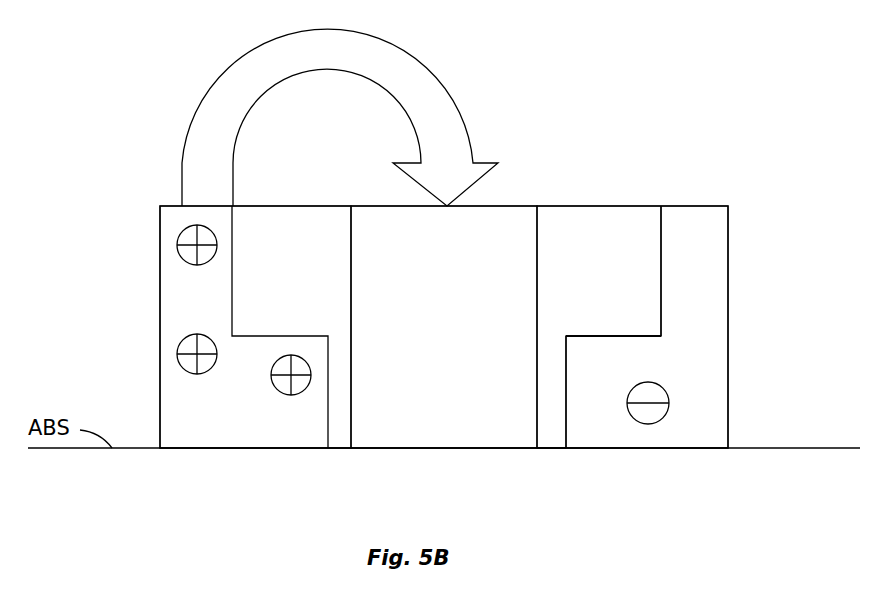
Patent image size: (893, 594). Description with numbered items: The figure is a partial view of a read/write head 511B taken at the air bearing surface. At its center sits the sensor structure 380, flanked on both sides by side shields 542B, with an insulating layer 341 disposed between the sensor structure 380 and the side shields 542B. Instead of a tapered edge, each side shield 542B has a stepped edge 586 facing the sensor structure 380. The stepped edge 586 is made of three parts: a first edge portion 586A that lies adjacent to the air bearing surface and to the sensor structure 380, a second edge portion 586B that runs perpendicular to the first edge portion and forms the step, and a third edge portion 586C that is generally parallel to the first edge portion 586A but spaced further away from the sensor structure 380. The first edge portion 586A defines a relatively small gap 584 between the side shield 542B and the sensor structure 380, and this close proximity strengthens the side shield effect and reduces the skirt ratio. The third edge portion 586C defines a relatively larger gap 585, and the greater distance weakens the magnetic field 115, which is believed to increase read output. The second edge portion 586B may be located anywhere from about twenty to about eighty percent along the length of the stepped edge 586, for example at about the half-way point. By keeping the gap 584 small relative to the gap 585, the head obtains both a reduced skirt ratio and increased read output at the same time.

The magnetic field 115 is at (226, 57).
The read/write head 511B is at (673, 64).
The gap 585 is at (599, 200).
The sensor structure 380 is at (518, 206).
The third edge portion 586C is at (661, 226).
The insulating layer 341 is at (315, 268).
The stepped edge 586 is at (661, 285).
The second edge portion 586B is at (645, 336).
The first edge portion 586A is at (328, 366).
The side shields 542B is at (160, 326).
The gap 584 is at (553, 456).